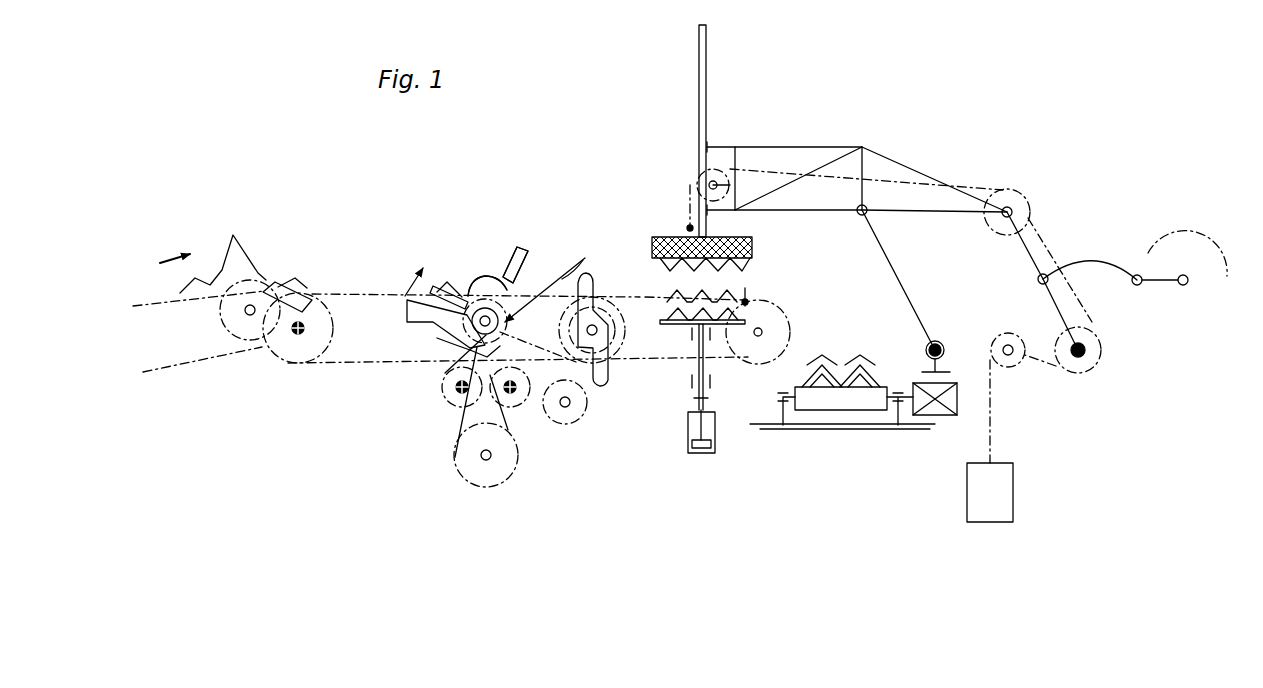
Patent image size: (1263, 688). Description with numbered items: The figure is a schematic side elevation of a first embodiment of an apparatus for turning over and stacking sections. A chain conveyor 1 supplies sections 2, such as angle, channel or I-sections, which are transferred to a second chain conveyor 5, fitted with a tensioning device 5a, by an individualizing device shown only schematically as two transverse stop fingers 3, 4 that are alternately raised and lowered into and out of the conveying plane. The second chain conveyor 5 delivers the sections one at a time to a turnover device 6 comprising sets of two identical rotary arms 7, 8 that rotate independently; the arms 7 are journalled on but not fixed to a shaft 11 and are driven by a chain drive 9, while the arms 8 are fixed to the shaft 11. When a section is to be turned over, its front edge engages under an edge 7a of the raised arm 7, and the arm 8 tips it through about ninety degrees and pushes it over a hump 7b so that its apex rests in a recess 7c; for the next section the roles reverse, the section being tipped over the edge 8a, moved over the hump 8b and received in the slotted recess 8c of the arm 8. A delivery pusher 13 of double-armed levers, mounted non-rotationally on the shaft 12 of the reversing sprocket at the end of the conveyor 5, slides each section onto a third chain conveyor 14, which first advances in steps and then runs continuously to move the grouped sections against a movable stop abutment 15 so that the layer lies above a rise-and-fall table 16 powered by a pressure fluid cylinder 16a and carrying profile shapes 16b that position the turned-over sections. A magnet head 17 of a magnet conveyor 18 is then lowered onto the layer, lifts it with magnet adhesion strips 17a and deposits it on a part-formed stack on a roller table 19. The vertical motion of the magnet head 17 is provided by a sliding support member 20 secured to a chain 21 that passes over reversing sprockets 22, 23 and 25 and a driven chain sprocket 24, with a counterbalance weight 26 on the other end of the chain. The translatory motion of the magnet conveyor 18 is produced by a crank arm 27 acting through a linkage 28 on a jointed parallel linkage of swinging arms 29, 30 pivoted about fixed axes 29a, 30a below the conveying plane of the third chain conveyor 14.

The chain conveyor 1 is at (200, 360).
The sections 2 is at (233, 265).
The finger 3 is at (273, 285).
The finger 4 is at (308, 297).
The second chain conveyor 5 is at (369, 291).
The tensioning device 5a is at (470, 465).
The turnover device 6 is at (550, 279).
The rotary arm 7 is at (528, 258).
The edge 7a is at (437, 283).
The hump 7b is at (487, 274).
The recess 7c is at (518, 250).
The rotary arm 8 is at (405, 312).
The edge 8a is at (468, 350).
The hump 8b is at (442, 342).
The slotted recess 8c is at (432, 331).
The chain drive 9 is at (544, 398).
The shaft 11 is at (484, 316).
The shaft 12 is at (612, 350).
The delivery pusher 13 is at (598, 335).
The third chain conveyor 14 is at (633, 297).
The stop abutment 15 is at (752, 300).
The rise-and-fall table 16 is at (722, 330).
The pressure fluid cylinder 16a is at (716, 447).
The profile shapes 16b is at (687, 305).
The magnet head 17 is at (757, 247).
The magnet adhesion strips 17a is at (755, 265).
The magnet conveyor 18 is at (893, 160).
The roller table 19 is at (855, 403).
The sliding support member 20 is at (699, 110).
The chain 21 is at (770, 170).
The reversing sprocket 22 is at (711, 173).
The reversing sprocket 23 is at (1012, 195).
The driven chain sprocket 24 is at (1090, 367).
The reversing sprocket 25 is at (1013, 367).
The counterbalance weight 26 is at (978, 524).
The crank arm 27 is at (1150, 285).
The linkage 28 is at (1097, 263).
The swinging arm 29 is at (1030, 250).
The fixed axis 29a is at (1090, 352).
The swinging arm 30 is at (905, 290).
The fixed axis 30a is at (942, 341).